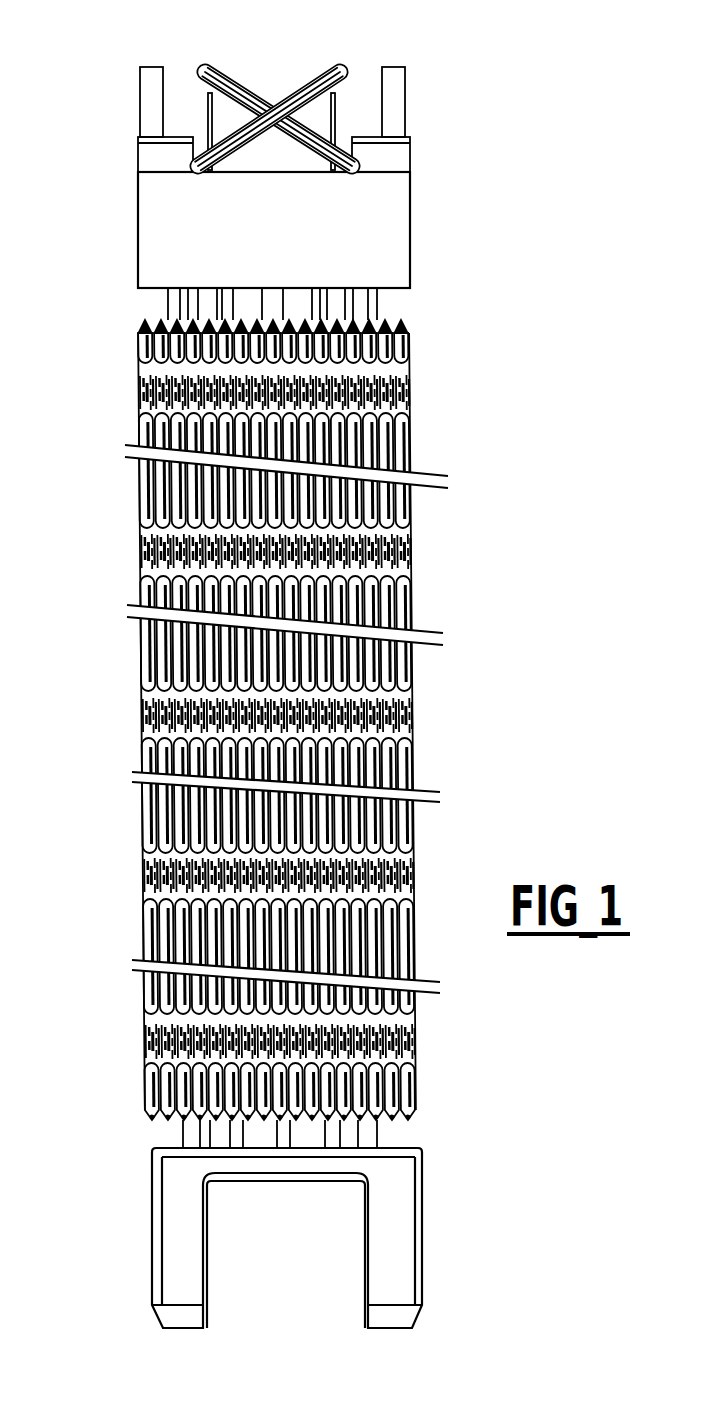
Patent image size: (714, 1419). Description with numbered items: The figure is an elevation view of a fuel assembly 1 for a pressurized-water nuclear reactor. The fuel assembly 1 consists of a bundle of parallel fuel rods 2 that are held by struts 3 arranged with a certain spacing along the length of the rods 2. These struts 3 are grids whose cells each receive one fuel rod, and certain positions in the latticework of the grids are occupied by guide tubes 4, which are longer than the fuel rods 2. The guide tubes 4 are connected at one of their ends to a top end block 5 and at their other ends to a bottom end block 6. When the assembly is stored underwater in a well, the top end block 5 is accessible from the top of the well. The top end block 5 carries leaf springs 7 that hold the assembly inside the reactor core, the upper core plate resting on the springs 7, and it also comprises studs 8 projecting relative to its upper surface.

The fuel assembly 1 is at (137, 631).
The fuel rods 2 is at (193, 355).
The struts 3 is at (402, 388).
The guide tubes 4 is at (387, 300).
The top end block 5 is at (175, 222).
The bottom end block 6 is at (183, 1213).
The leaf springs 7 is at (158, 82).
The studs 8 is at (158, 162).